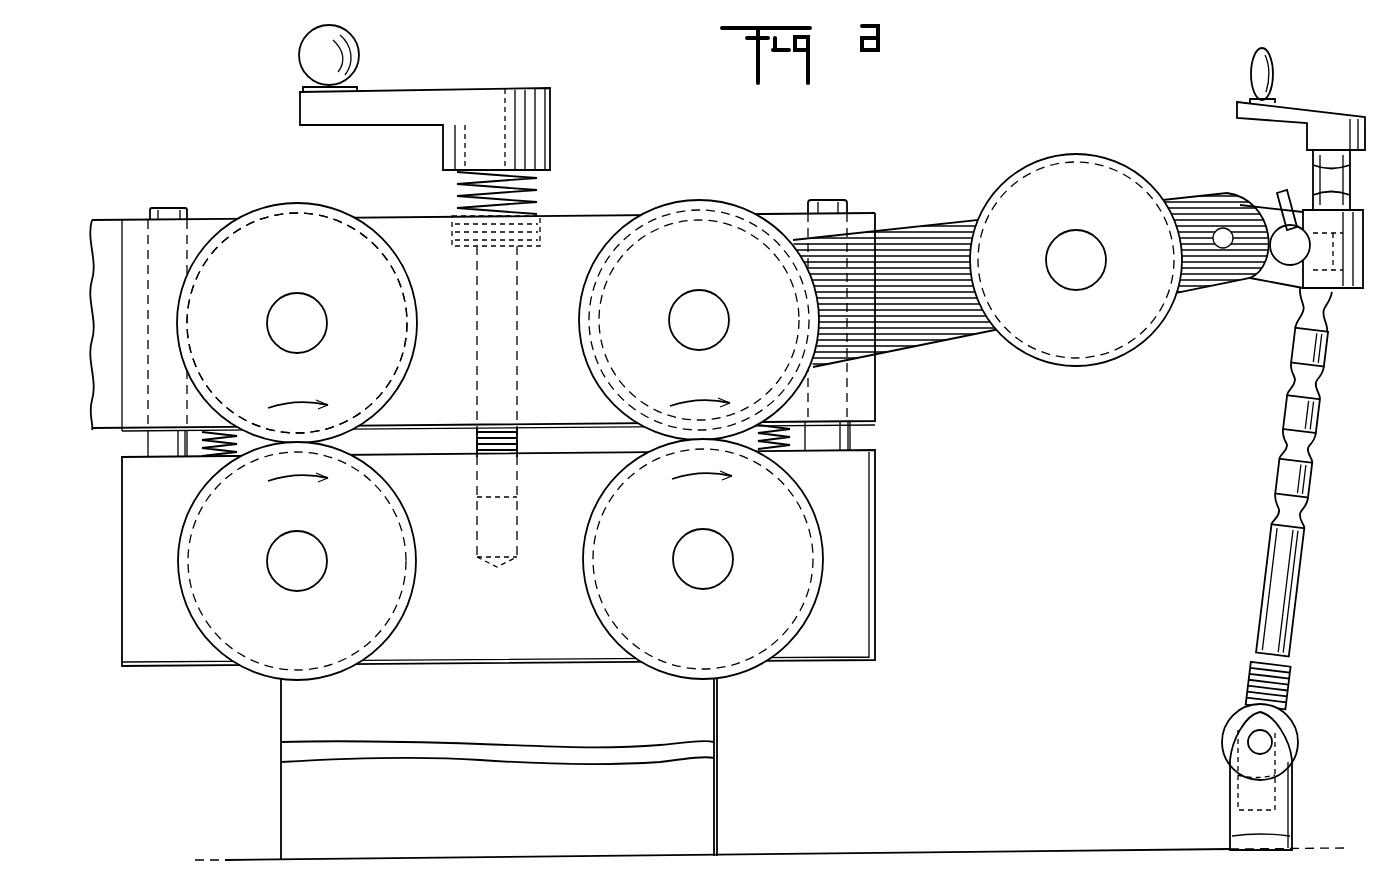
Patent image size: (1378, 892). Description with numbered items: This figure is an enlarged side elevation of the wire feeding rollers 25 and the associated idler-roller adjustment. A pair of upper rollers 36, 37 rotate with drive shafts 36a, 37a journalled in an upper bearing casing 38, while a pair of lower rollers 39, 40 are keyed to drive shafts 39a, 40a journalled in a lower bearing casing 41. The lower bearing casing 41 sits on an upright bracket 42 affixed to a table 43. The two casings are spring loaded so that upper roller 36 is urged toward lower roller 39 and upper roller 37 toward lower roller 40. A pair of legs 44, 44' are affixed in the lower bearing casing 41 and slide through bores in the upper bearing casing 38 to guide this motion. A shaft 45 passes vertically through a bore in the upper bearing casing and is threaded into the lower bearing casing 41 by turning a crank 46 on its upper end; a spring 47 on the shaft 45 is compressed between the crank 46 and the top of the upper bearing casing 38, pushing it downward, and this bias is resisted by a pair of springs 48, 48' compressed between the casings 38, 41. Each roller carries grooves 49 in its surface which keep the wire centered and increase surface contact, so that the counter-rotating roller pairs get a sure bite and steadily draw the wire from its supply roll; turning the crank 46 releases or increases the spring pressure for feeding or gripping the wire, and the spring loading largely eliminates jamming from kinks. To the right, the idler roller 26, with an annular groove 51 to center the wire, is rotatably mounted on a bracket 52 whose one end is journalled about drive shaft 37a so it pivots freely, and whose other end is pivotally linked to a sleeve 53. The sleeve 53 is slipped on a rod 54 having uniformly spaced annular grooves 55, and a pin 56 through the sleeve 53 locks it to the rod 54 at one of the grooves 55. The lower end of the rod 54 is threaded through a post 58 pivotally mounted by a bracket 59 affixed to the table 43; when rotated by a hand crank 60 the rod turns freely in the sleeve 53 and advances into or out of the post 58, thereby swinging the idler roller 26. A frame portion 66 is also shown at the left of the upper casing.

The rollers 25 is at (652, 155).
The idler roller 26 is at (1035, 178).
The upper roller 36 is at (272, 212).
The drive shaft 36a is at (293, 305).
The upper roller 37 is at (710, 205).
The drive shaft 37a is at (695, 300).
The upper bearing casing 38 is at (570, 227).
The lower roller 39 is at (243, 655).
The drive shaft 39a is at (300, 578).
The lower roller 40 is at (748, 655).
The drive shaft 40a is at (708, 578).
The lower bearing casing 41 is at (548, 650).
The upright bracket 42 is at (285, 770).
The table 43 is at (980, 848).
The leg 44 is at (158, 314).
The leg 44' is at (840, 309).
The shaft 45 is at (480, 440).
The crank 46 is at (425, 100).
The spring 47 is at (460, 190).
The spring 48 is at (198, 464).
The spring 48' is at (800, 455).
The grooves 49 is at (418, 310).
The annular groove 51 is at (1040, 362).
The bracket 52 is at (930, 325).
The sleeve 53 is at (1305, 195).
The rod 54 is at (1260, 669).
The annular grooves 55 is at (1285, 430).
The pin 56 is at (1288, 262).
The post 58 is at (1295, 735).
The bracket 59 is at (1235, 825).
The hand crank 60 is at (1295, 105).
The frame extension 66 is at (105, 230).